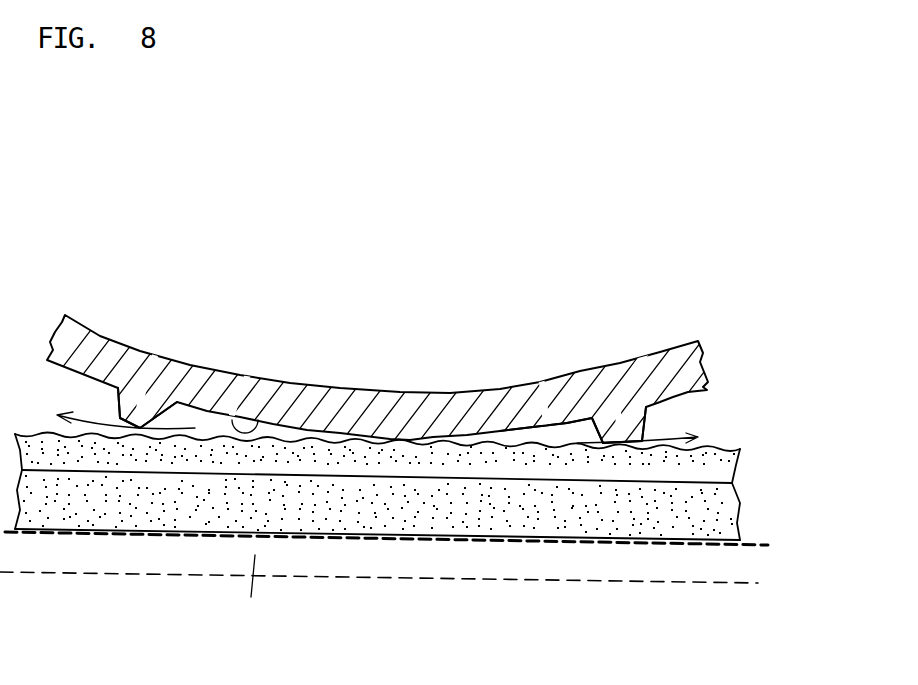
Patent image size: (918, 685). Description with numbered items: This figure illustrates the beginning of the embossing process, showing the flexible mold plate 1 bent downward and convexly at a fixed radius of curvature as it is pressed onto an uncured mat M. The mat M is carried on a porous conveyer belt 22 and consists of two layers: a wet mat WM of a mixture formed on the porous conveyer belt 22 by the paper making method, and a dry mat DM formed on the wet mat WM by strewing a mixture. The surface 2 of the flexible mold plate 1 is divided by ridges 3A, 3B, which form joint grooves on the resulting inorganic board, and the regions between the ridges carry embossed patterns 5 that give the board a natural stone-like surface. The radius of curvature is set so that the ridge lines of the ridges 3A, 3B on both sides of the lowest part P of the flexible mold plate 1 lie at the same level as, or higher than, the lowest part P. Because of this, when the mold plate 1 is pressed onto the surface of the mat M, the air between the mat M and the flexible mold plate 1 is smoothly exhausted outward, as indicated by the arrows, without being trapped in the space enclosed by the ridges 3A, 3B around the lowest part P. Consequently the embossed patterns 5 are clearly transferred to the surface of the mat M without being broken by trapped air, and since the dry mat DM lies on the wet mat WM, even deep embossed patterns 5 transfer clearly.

The flexible mold plate 1 is at (453, 392).
The surface 2 is at (232, 415).
The ridge 3A is at (137, 418).
The ridge 3B is at (621, 433).
The embossed patterns 5 is at (518, 428).
The dry mat DM is at (715, 452).
The mat M is at (751, 497).
The wet mat WM is at (730, 515).
The porous conveyer belt 22 is at (379, 598).
The lowest part P is at (388, 457).